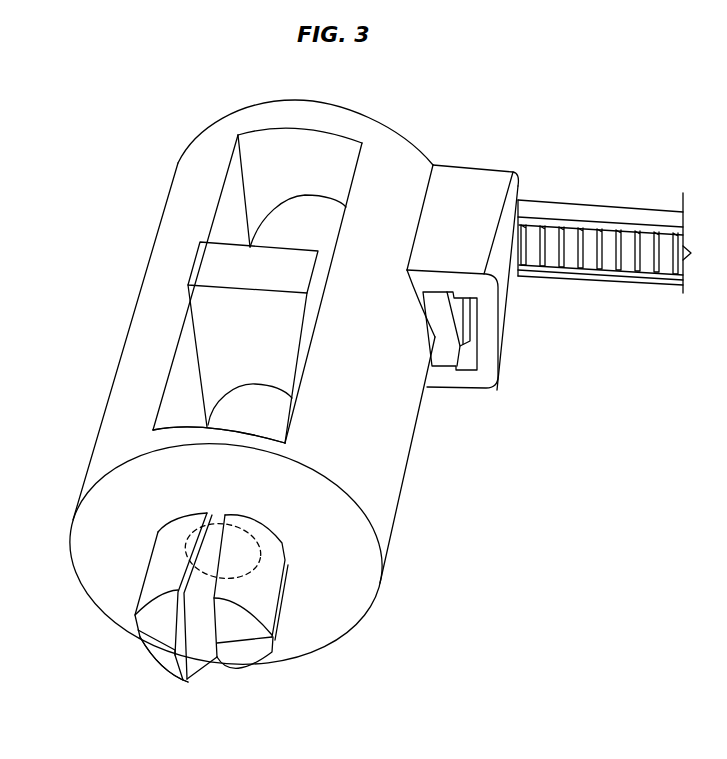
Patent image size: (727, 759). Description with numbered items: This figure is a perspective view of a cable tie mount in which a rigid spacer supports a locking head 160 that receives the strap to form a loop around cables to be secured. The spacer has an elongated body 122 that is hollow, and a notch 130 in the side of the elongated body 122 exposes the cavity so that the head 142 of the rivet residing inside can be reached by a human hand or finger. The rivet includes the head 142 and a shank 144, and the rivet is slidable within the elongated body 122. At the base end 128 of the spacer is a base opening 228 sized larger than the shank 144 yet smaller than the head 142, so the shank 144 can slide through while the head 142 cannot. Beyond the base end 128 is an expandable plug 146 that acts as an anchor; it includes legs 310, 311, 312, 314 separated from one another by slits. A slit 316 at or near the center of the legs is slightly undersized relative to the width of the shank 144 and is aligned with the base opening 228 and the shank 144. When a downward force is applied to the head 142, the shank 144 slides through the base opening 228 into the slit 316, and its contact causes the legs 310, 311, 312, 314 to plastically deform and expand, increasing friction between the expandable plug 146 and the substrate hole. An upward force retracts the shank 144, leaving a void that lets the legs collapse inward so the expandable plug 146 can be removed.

The elongated body 122 is at (385, 410).
The base end 128 is at (343, 612).
The notch 130 is at (183, 399).
The head 142 is at (222, 263).
The shank 144 is at (240, 407).
The expandable plug 146 is at (142, 687).
The locking head 160 is at (510, 285).
The base opening 228 is at (212, 516).
The leg 310 is at (167, 558).
The leg 311 is at (153, 662).
The leg 312 is at (272, 632).
The leg 314 is at (275, 562).
The slit 316 is at (203, 683).